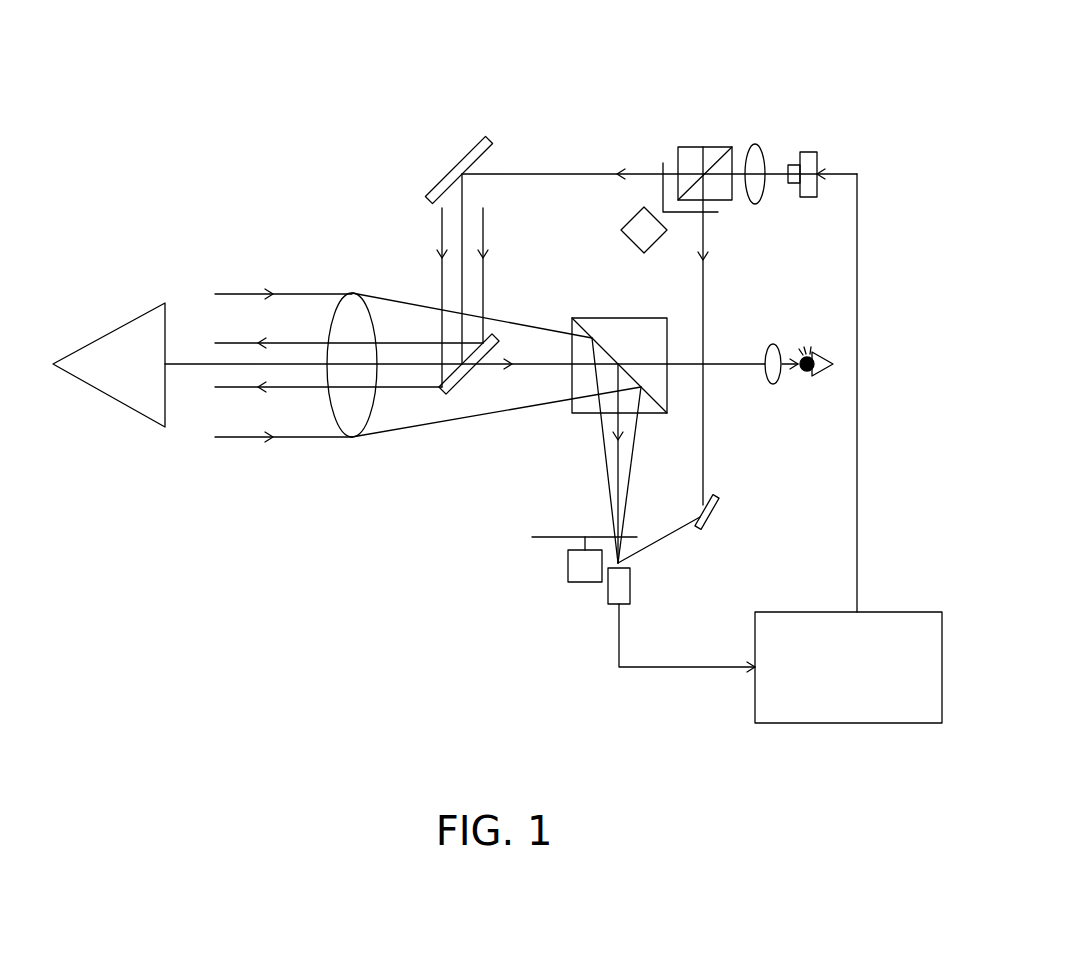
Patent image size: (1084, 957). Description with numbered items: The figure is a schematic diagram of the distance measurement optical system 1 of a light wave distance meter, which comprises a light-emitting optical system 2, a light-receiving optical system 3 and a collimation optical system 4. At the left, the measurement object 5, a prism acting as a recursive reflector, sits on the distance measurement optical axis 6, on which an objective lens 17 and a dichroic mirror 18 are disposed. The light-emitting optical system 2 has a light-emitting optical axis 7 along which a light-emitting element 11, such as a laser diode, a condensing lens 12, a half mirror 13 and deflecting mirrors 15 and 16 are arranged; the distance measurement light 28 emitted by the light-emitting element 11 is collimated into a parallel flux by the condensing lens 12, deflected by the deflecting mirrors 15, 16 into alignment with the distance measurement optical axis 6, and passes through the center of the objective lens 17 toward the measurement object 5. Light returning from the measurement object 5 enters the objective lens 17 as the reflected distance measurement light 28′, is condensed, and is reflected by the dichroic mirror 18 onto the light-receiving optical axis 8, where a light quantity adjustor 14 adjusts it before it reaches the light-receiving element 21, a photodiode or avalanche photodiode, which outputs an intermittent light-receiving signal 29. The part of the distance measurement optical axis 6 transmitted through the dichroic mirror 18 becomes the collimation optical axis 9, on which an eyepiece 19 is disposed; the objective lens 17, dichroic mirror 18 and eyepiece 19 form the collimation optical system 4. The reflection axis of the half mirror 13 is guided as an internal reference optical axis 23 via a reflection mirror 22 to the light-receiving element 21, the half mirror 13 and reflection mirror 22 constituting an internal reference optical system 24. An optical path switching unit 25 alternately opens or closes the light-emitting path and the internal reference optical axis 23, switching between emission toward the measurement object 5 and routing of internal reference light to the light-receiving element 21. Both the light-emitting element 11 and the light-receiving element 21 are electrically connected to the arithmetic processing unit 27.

The distance measurement optical system 1 is at (323, 126).
The light-emitting optical system 2 is at (648, 100).
The light-receiving optical system 3 is at (551, 440).
The collimation optical system 4 is at (763, 330).
The measurement object 5 is at (105, 335).
The distance measurement optical axis 6 is at (187, 363).
The light-emitting optical axis 7 is at (573, 165).
The light-receiving optical axis 8 is at (620, 458).
The collimation optical axis 9 is at (727, 360).
The light-emitting element 11 is at (808, 152).
The condensing lens 12 is at (755, 143).
The half mirror 13 is at (697, 147).
The light quantity adjustor 14 is at (555, 565).
The deflecting mirror 15 is at (462, 158).
The deflecting mirror 16 is at (465, 395).
The objective lens 17 is at (370, 432).
The dichroic mirror 18 is at (595, 318).
The eyepiece 19 is at (777, 385).
The light-receiving element 21 is at (632, 588).
The reflection mirror 22 is at (718, 512).
The internal reference optical axis 23 is at (705, 387).
The internal reference optical system 24 is at (722, 458).
The optical path switching unit 25 is at (625, 218).
The arithmetic processing unit 27 is at (893, 612).
The distance measurement light 28 is at (297, 343).
The reflected distance measurement light 28′ is at (247, 438).
The light-receiving signal 29 is at (688, 669).